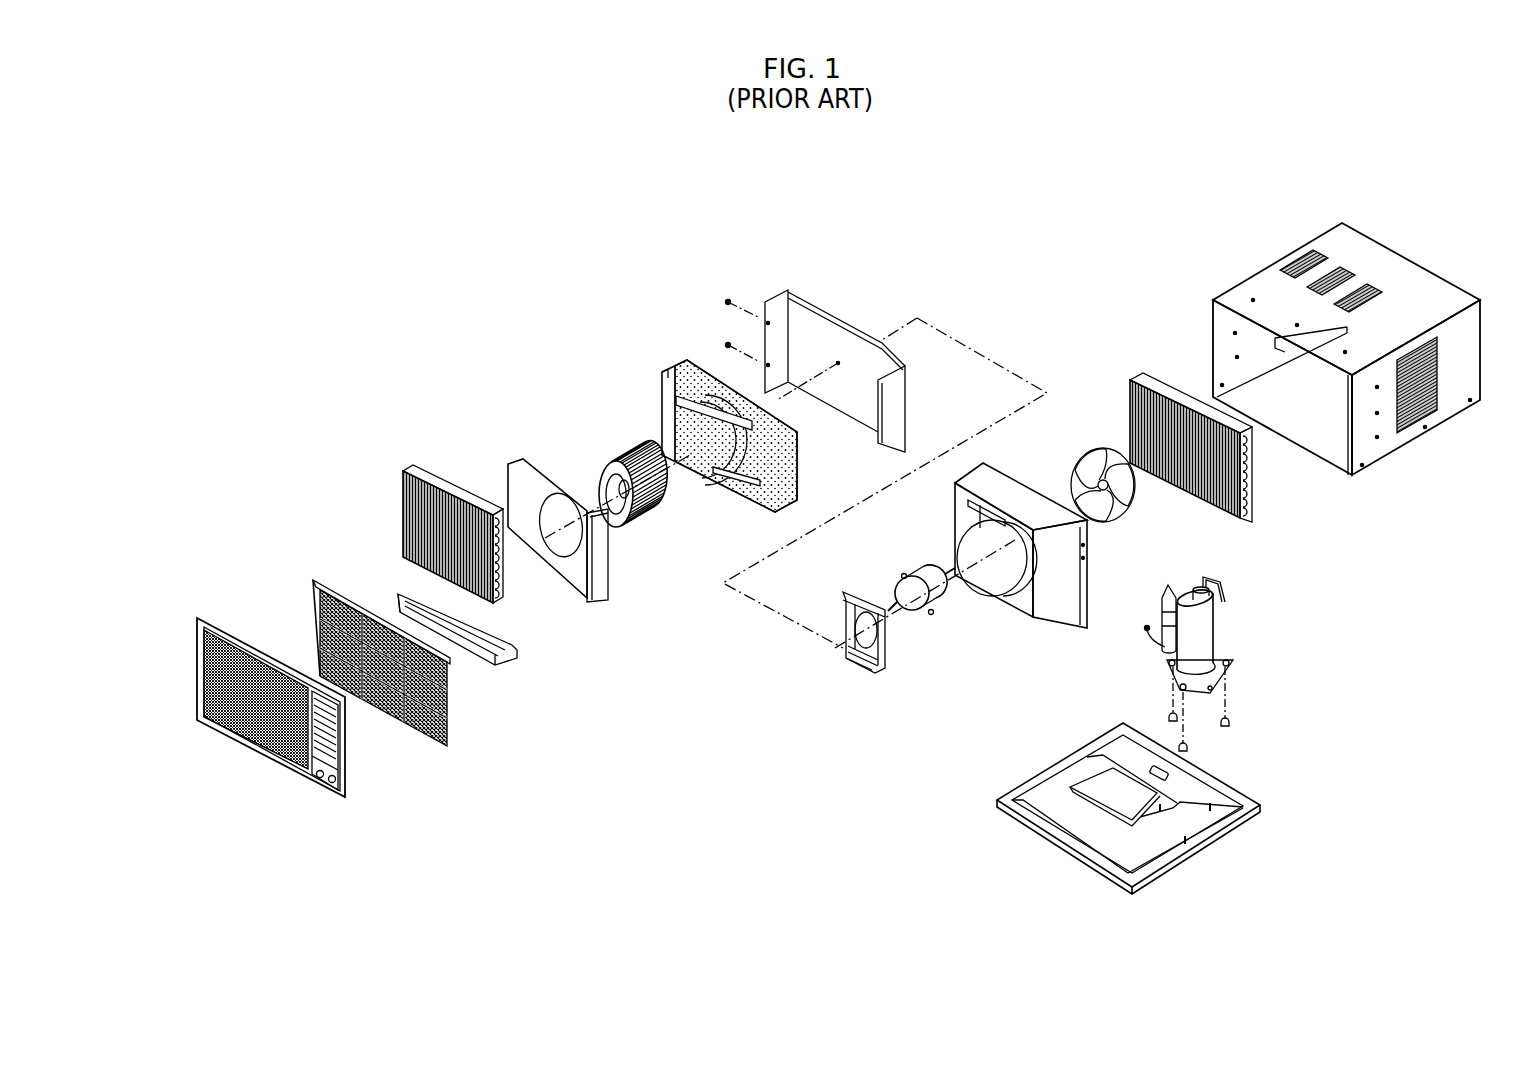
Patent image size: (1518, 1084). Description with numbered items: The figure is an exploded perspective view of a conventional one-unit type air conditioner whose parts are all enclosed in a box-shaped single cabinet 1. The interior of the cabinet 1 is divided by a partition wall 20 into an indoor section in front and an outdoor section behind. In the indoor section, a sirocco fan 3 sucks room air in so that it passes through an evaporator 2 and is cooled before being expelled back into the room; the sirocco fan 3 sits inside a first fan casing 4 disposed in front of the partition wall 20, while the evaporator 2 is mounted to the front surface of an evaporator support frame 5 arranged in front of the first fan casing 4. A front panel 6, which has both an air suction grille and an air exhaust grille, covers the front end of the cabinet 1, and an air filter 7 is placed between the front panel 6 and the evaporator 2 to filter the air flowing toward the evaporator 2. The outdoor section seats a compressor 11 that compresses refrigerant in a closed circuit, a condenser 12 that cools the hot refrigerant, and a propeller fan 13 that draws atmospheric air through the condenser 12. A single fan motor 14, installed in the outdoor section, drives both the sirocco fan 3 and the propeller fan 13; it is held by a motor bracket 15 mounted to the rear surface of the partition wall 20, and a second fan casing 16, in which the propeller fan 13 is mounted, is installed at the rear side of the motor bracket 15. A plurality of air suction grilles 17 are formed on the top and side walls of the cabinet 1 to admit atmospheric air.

The cabinet 1 is at (1265, 290).
The evaporator 2 is at (402, 506).
The sirocco fan 3 is at (622, 446).
The first fan casing 4 is at (680, 364).
The evaporator support frame 5 is at (512, 470).
The front panel 6 is at (200, 682).
The air filter 7 is at (320, 612).
The compressor 11 is at (1208, 632).
The condenser 12 is at (1130, 405).
The propeller fan 13 is at (1088, 462).
The fan motor 14 is at (930, 618).
The motor bracket 15 is at (890, 655).
The second fan casing 16 is at (1054, 606).
The air suction grilles 17 is at (1345, 270).
The partition wall 20 is at (836, 296).